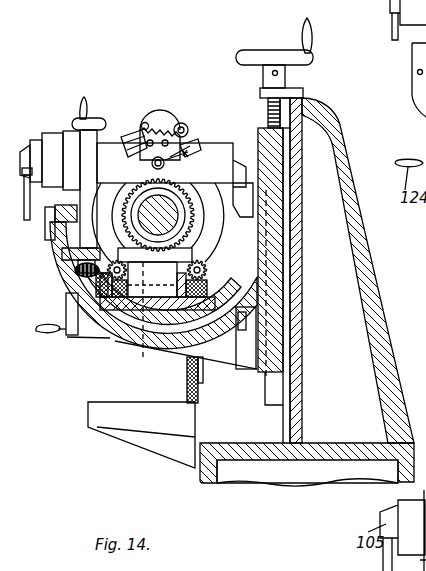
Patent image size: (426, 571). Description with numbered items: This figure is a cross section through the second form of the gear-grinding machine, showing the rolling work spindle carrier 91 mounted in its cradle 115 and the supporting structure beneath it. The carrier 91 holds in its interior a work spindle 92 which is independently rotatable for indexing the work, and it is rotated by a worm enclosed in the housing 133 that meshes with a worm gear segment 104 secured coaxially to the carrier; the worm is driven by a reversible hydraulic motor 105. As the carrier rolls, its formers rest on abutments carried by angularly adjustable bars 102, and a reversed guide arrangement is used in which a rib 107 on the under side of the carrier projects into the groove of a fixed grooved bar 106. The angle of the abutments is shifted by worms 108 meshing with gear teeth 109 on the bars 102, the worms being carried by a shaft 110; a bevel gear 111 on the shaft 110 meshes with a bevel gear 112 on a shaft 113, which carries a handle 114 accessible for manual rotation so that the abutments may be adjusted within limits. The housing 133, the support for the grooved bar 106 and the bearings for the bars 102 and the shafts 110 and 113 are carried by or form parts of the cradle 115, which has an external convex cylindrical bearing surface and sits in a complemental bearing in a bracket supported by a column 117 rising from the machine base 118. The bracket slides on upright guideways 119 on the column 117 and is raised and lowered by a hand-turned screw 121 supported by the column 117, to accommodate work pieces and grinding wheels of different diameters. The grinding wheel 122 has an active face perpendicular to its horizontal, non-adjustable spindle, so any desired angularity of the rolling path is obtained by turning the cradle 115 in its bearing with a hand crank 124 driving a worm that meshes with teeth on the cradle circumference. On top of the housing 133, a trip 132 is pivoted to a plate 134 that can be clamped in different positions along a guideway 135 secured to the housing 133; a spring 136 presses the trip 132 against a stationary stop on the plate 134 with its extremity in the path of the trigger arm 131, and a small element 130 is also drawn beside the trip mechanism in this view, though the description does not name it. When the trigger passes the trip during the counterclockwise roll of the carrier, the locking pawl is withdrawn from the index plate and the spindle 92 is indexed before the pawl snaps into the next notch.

The reversible hydraulic motor 105 is at (62, 143).
The handle 114 is at (83, 117).
The guideway 135 is at (132, 130).
The housing 133 is at (104, 146).
The spring 136 is at (156, 128).
The plate 134 is at (178, 124).
The trip 132 is at (198, 138).
The trigger arm 131 is at (190, 154).
The roller 130 is at (152, 165).
The screw 121 is at (268, 110).
The work spindle 92 is at (168, 200).
The rolling work spindle carrier 91 is at (124, 200).
The worm gear segment 104 is at (126, 208).
The gear teeth 109 is at (117, 260).
The rib 107 is at (194, 222).
The fixed grooved bar 106 is at (192, 240).
The shaft 113 is at (58, 236).
The bevel gear 112 is at (75, 271).
The bevel gear 111 is at (66, 297).
The hand crank 124 is at (44, 333).
The worms 108 is at (118, 300).
The shaft 110 is at (163, 318).
The angularly adjustable bars 102 is at (180, 268).
The grinding wheel 122 is at (183, 400).
The upright guideways 119 is at (265, 398).
The cradle 115 is at (255, 230).
The column 117 is at (371, 303).
The machine base 118 is at (256, 455).